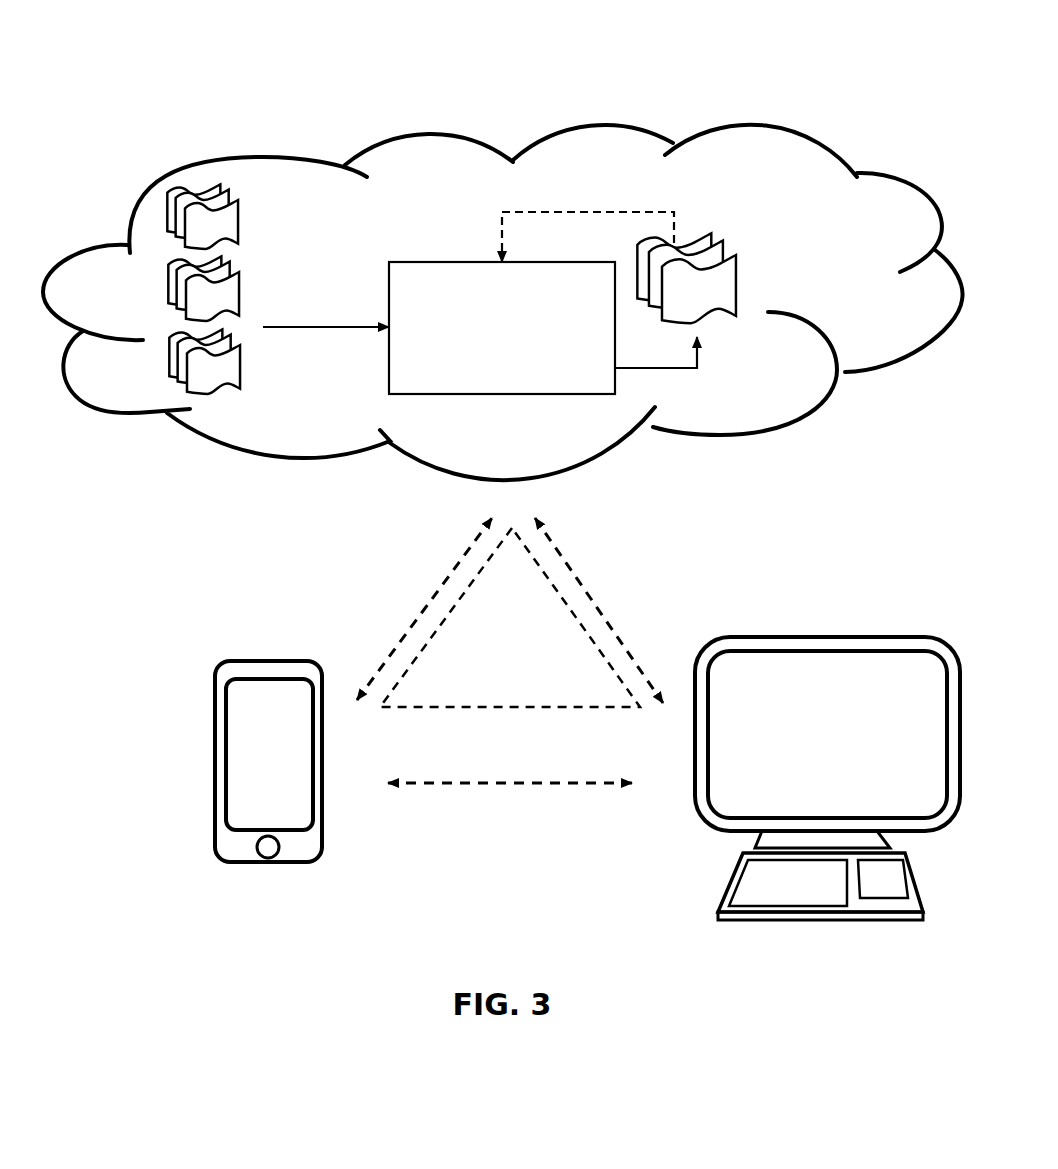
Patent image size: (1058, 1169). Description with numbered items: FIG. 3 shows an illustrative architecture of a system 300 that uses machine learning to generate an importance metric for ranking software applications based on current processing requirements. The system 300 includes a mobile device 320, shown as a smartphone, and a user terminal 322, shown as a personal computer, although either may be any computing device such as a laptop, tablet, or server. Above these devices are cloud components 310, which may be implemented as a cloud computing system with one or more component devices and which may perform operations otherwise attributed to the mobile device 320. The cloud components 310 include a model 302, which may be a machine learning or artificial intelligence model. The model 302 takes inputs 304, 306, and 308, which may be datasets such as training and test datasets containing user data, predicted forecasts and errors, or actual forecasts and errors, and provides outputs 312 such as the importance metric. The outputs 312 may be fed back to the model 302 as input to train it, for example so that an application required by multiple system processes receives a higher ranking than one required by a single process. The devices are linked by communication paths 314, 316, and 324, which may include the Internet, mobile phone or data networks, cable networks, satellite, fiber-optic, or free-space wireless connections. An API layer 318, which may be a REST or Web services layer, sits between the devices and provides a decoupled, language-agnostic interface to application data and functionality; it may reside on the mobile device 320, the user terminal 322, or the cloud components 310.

The system 300 is at (505, 34).
The model 302 is at (486, 338).
The input 304 is at (168, 212).
The input 306 is at (168, 287).
The input 308 is at (173, 355).
The cloud components 310 is at (617, 180).
The outputs 312 is at (744, 293).
The communication path 314 is at (422, 580).
The communication path 316 is at (615, 582).
The API layer 318 is at (496, 646).
The mobile device 320 is at (262, 650).
The user terminal 322 is at (827, 620).
The communication path 324 is at (542, 795).